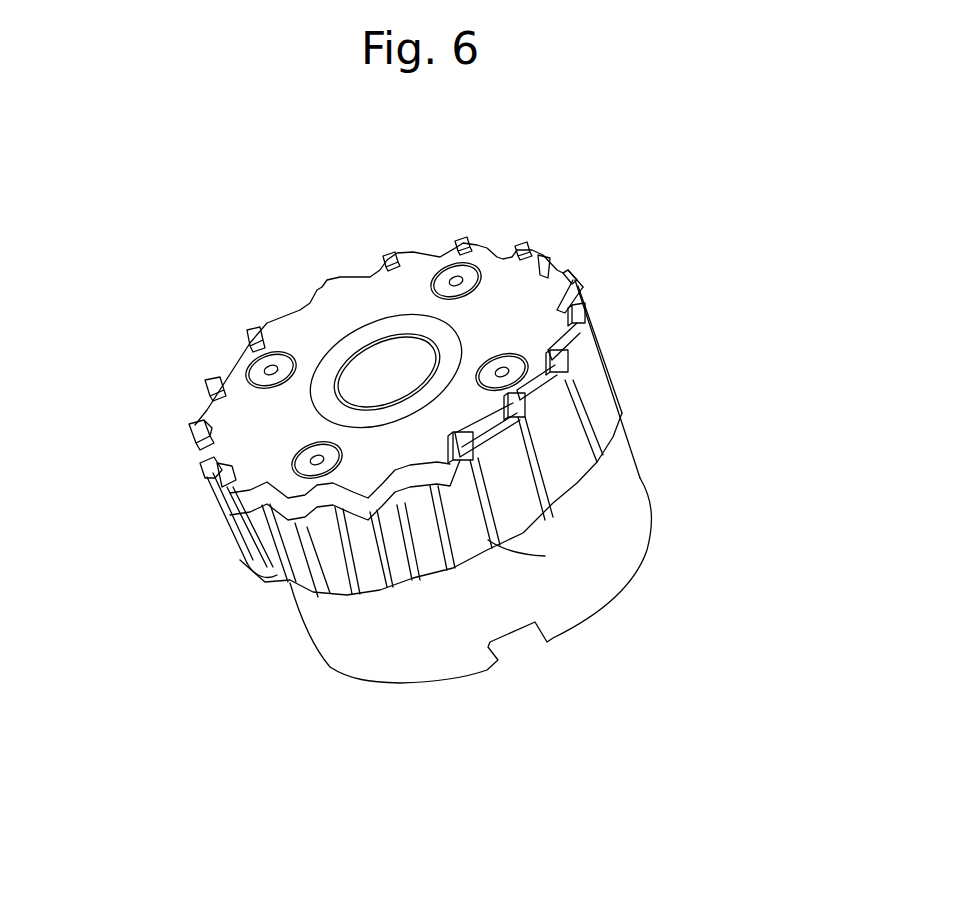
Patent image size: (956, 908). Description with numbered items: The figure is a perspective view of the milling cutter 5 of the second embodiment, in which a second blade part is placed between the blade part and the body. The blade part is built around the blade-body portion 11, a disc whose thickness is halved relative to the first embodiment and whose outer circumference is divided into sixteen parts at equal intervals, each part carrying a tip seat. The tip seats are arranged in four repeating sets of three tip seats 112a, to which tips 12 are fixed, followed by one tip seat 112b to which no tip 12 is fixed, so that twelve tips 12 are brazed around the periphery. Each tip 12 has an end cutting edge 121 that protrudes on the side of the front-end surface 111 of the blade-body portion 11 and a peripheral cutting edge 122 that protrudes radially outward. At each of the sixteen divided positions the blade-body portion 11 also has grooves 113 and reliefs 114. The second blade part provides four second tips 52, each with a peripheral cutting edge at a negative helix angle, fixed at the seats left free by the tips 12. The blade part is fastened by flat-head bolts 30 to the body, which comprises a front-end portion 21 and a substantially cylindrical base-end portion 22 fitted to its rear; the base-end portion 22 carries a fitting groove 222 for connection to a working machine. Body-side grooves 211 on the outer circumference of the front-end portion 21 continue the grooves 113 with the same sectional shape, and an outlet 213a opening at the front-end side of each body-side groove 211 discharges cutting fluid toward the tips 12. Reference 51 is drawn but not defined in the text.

The milling cutter 5 is at (275, 300).
The blade-body portion 11 is at (389, 346).
The front-end surface 111 is at (302, 444).
The flat-head bolts 30 is at (458, 282).
The grooves 113 is at (220, 492).
The end cutting edge 121 is at (194, 430).
The peripheral cutting edge 122 is at (205, 450).
The tip seats 112a is at (545, 256).
The tip seat 112b is at (567, 281).
The reliefs 114 is at (577, 334).
The tips 12 is at (562, 364).
The front-end portion 21 is at (602, 433).
The body-side grooves 211 is at (291, 563).
The outlet 213a is at (282, 512).
The spring tab 51 is at (543, 402).
The base-end portion 22 is at (628, 517).
The fitting groove 222 is at (500, 645).
The second tips 52 is at (488, 540).